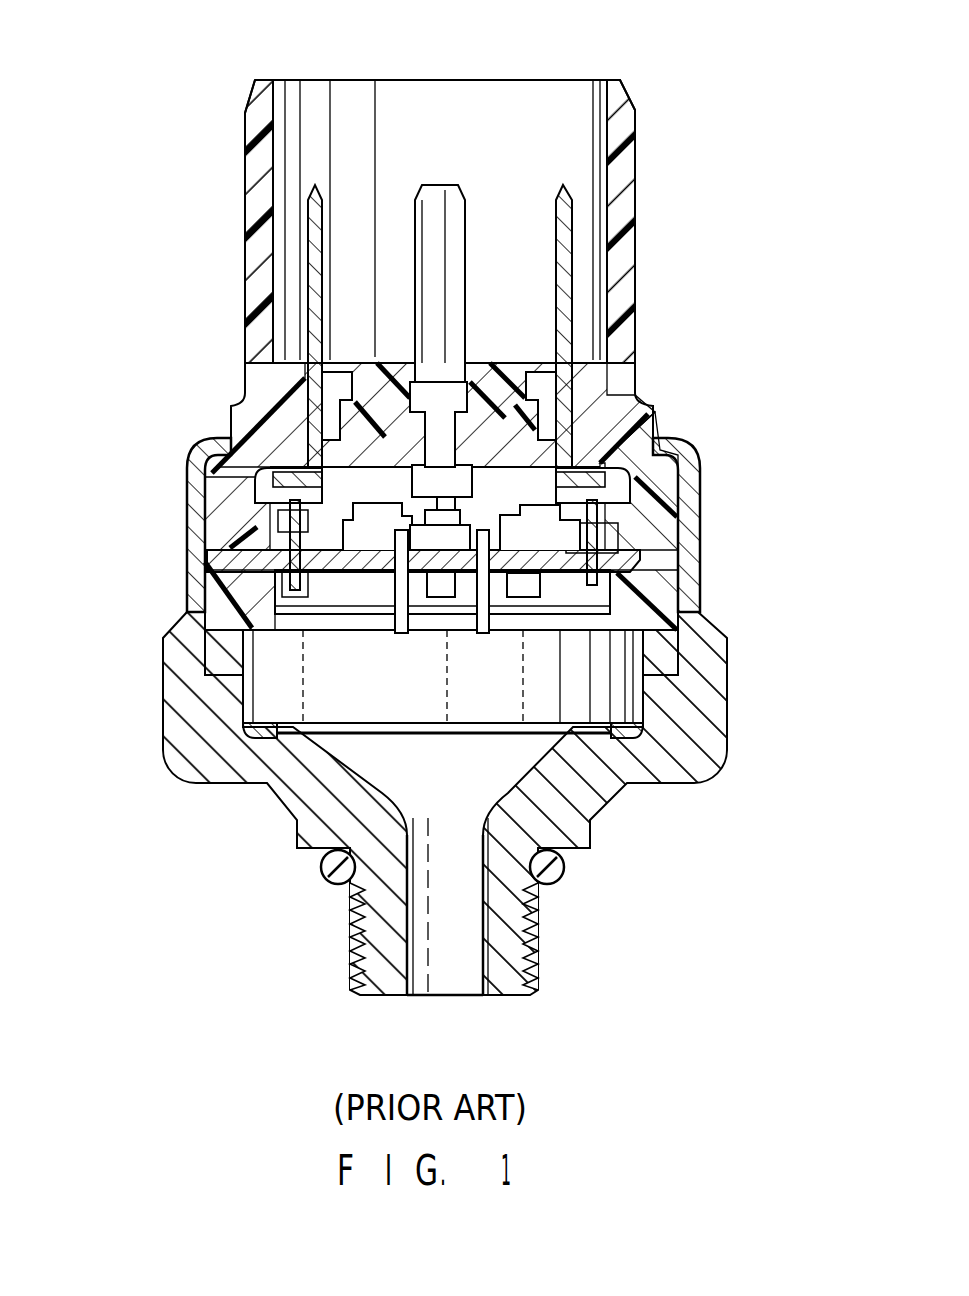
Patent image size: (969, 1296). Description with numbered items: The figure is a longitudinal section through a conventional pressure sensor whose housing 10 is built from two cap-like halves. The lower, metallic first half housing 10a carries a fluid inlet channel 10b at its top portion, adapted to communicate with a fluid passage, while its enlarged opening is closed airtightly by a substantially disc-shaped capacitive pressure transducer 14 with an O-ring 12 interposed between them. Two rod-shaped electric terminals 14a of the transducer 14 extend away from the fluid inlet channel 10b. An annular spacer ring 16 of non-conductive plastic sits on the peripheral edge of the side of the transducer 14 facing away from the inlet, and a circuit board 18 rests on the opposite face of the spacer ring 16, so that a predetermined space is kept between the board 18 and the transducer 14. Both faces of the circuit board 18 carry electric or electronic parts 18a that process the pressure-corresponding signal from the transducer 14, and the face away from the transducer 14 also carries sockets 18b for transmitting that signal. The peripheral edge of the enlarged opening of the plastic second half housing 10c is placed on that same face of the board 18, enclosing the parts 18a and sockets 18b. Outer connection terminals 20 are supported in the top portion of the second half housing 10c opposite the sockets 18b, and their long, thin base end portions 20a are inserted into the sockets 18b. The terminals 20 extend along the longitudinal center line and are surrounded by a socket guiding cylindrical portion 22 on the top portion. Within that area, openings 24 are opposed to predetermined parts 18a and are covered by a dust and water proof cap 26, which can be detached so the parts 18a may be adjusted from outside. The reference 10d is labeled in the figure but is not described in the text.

The housing 10 is at (158, 693).
The first cap-like half housing 10a is at (731, 709).
The fluid inlet channel 10b is at (411, 932).
The second cap-like half housing 10c is at (630, 395).
The housing flange step 10d is at (210, 437).
The O-ring 12 is at (637, 738).
The capacitive pressure transducer 14 is at (325, 700).
The rod-shaped electric terminals 14a is at (402, 620).
The annular spacer ring 16 is at (668, 606).
The circuit board 18 is at (640, 561).
The electric or electronic parts 18a is at (383, 521).
The sockets 18b is at (257, 493).
The outer connection terminals 20 is at (322, 186).
The base end portions 20a is at (262, 530).
The socket guiding cylindrical portion 22 is at (645, 152).
The openings 24 is at (330, 372).
The dust and water proof cap 26 is at (390, 363).